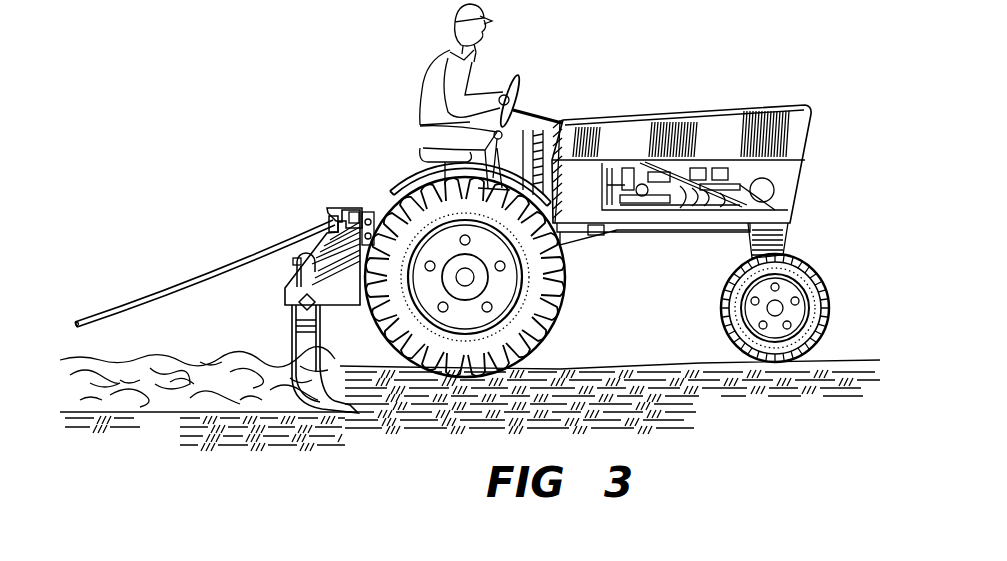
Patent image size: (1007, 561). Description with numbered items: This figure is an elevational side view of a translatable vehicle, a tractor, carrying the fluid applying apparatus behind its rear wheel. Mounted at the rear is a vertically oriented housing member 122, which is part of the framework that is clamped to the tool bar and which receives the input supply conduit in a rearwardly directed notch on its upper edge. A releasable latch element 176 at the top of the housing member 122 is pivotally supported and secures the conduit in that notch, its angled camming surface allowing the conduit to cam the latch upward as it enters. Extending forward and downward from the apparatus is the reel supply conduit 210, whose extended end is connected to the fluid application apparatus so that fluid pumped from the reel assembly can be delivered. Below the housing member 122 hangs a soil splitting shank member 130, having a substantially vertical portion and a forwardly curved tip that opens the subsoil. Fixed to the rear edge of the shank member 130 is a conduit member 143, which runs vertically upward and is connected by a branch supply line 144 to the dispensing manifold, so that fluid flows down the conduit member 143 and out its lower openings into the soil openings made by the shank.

The housing member 122 is at (334, 296).
The releasable latch element 176 is at (338, 207).
The reel supply conduit 210 is at (232, 272).
The branch supply line 144 is at (324, 232).
The conduit member 143 is at (292, 275).
The soil splitting shank member 130 is at (294, 313).